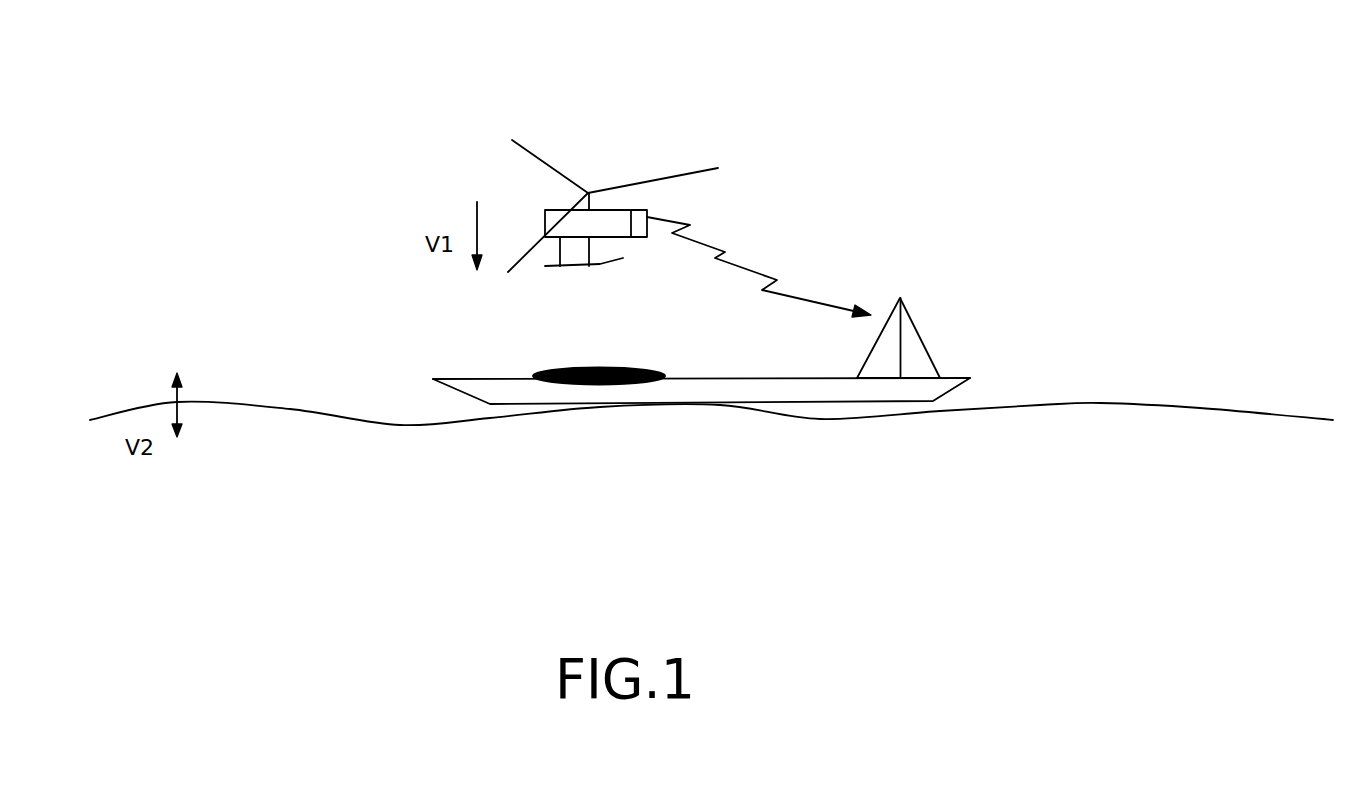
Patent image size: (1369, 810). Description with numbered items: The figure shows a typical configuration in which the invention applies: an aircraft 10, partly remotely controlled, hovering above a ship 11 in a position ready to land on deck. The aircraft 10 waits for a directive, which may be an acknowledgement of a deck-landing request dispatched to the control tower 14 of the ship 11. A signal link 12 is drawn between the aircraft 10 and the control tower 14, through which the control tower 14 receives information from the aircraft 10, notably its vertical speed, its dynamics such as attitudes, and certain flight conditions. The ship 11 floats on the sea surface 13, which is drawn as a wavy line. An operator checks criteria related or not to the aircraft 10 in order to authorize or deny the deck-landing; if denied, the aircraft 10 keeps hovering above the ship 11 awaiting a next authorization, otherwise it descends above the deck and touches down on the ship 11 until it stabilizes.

The aircraft 10 is at (599, 186).
The ship 11 is at (467, 379).
The communication signal 12 is at (777, 280).
The sea surface 13 is at (1043, 407).
The control tower 14 is at (937, 340).